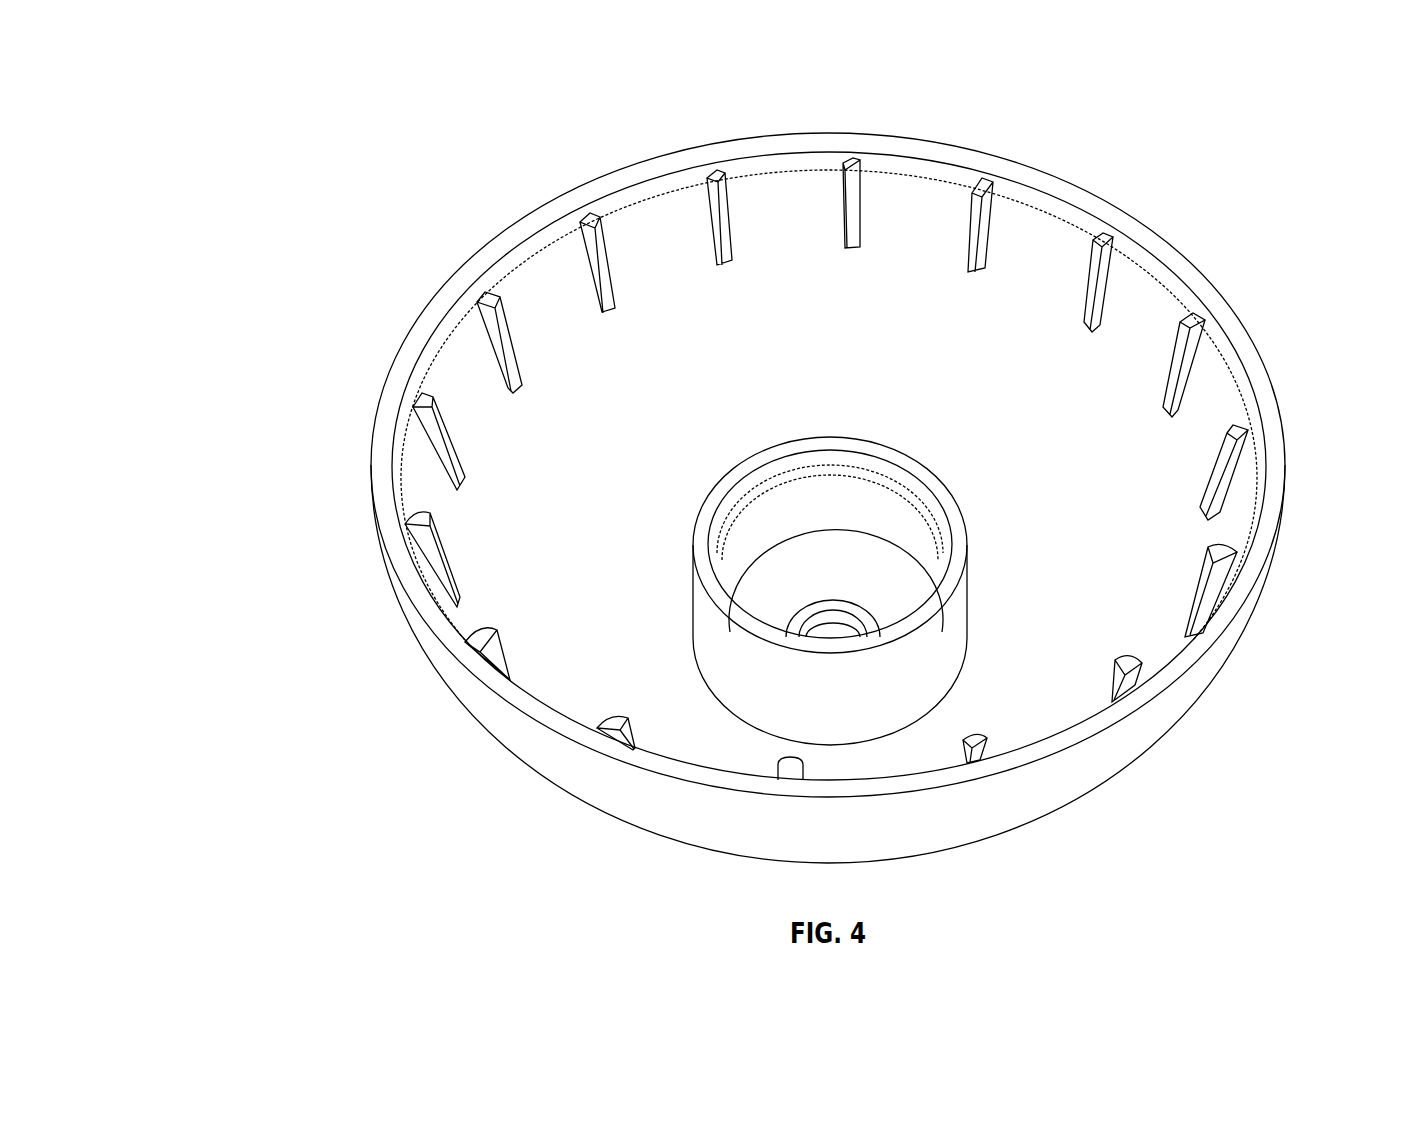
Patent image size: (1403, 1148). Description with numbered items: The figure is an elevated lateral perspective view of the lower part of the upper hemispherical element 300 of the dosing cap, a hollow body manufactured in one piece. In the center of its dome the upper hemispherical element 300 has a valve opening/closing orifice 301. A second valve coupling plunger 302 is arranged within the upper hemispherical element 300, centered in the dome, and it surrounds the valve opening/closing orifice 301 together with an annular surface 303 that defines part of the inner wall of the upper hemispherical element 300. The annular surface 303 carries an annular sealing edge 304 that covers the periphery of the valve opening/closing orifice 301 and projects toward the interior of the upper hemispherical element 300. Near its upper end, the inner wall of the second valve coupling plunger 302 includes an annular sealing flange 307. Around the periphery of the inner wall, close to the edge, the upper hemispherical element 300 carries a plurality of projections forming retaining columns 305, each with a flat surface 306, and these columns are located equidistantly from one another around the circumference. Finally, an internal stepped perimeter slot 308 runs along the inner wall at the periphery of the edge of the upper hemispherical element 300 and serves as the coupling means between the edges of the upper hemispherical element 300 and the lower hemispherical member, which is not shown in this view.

The upper hemispherical element 300 is at (745, 498).
The valve opening/closing orifice 301 is at (845, 643).
The second valve coupling plunger 302 is at (973, 629).
The annular surface 303 is at (734, 600).
The annular sealing edge 304 is at (833, 588).
The retaining columns 305 is at (848, 462).
The flat surface 306 is at (1112, 228).
The annular sealing flange 307 is at (736, 487).
The internal stepped perimeter slot 308 is at (598, 204).